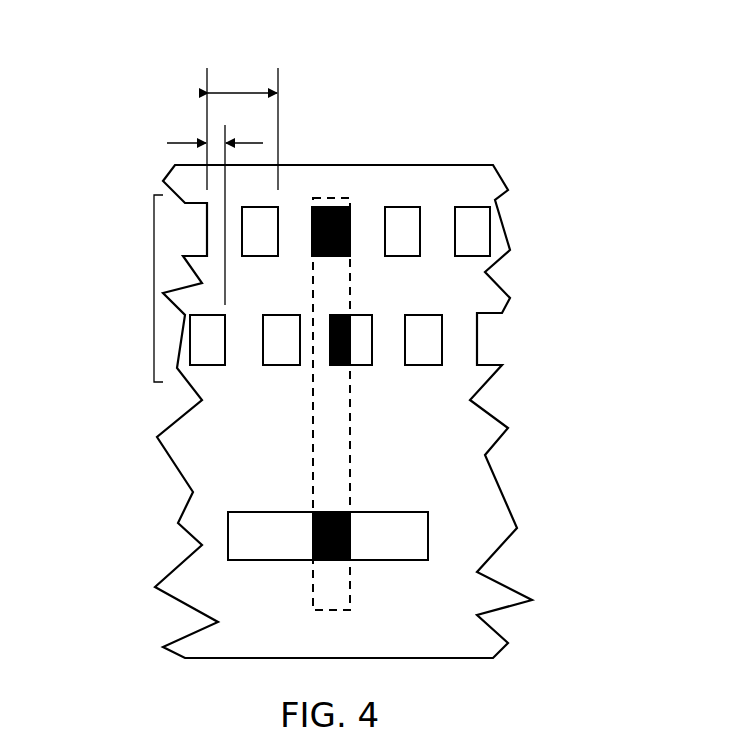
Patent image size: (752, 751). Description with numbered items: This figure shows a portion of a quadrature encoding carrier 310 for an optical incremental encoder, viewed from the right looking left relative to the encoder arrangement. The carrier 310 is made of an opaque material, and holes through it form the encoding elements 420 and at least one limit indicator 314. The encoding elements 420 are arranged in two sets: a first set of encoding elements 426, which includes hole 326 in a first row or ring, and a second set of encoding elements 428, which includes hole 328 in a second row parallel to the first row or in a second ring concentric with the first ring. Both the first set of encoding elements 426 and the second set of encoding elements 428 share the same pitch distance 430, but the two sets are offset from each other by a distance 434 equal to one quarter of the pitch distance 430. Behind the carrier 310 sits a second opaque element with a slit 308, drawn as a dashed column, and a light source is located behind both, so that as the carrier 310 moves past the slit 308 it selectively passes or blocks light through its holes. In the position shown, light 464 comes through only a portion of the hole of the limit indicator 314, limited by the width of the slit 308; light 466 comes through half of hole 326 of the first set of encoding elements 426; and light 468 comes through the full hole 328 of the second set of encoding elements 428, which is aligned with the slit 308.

The slit 308 is at (348, 445).
The quadrature encoding carrier 310 is at (343, 411).
The limit indicator 314 is at (428, 533).
The hole 326 is at (372, 355).
The hole 328 is at (353, 214).
The encoding elements 420 is at (154, 289).
The first set of encoding elements 426 is at (514, 345).
The second set of encoding elements 428 is at (514, 233).
The pitch distance 430 is at (240, 90).
The offset distance 434 is at (178, 140).
The light 464 is at (313, 532).
The light 466 is at (334, 351).
The light 468 is at (331, 207).